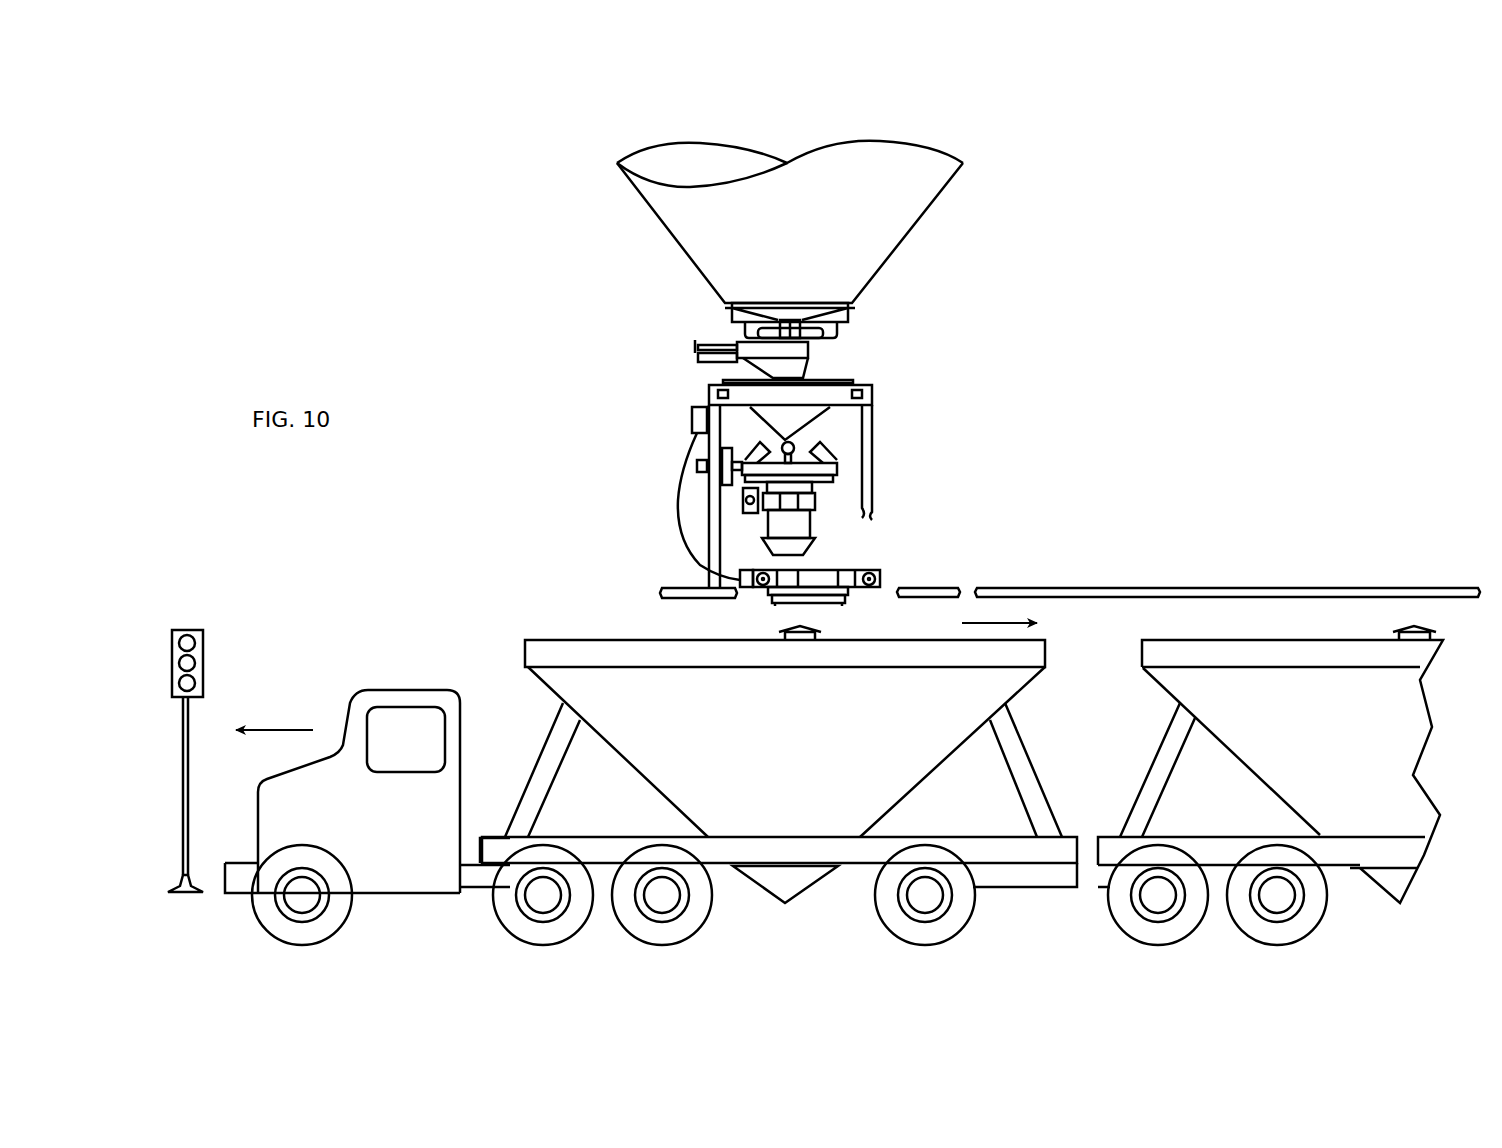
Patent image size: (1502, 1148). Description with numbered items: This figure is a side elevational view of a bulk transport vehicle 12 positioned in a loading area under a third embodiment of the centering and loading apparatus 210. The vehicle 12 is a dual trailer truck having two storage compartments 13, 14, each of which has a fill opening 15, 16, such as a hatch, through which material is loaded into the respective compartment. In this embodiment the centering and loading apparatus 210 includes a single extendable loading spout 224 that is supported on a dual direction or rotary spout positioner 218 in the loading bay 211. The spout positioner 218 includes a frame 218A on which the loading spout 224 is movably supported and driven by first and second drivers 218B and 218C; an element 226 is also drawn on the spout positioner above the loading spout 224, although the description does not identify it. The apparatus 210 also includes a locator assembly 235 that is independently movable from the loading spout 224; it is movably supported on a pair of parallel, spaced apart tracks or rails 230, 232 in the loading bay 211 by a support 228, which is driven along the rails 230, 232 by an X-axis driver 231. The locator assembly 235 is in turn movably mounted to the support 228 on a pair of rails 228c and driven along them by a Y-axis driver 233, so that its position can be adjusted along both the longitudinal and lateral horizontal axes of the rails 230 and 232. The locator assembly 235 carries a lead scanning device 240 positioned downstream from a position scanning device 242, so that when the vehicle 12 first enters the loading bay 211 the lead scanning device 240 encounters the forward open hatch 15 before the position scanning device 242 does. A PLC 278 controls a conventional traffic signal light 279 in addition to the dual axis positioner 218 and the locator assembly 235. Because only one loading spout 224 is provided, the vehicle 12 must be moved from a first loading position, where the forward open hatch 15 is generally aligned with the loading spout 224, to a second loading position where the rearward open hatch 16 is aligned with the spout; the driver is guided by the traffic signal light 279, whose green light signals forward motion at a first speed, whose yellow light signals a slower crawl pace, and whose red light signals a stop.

The bulk transport vehicle 12 is at (352, 668).
The storage compartment 13 is at (910, 758).
The storage compartment 14 is at (1270, 757).
The fill opening 15 is at (818, 636).
The fill opening 16 is at (1395, 633).
The centering and loading apparatus 210 is at (1005, 416).
The loading bay 211 is at (542, 572).
The dual direction spout positioner 218 is at (940, 340).
The frame 218A is at (874, 420).
The first driver 218B is at (714, 378).
The second driver 218C is at (752, 398).
The loading spout 224 is at (800, 525).
The valve assembly 226 is at (842, 468).
The support 228 is at (888, 576).
The rails 228c is at (831, 624).
The track or rail 230 is at (965, 590).
The X-axis driver 231 is at (745, 560).
The track or rail 232 is at (1097, 588).
The Y-axis driver 233 is at (820, 572).
The locator assembly 235 is at (898, 556).
The lead scanning device 240 is at (843, 603).
The position scanning device 242 is at (775, 602).
The PLC 278 is at (684, 415).
The traffic signal light 279 is at (203, 616).